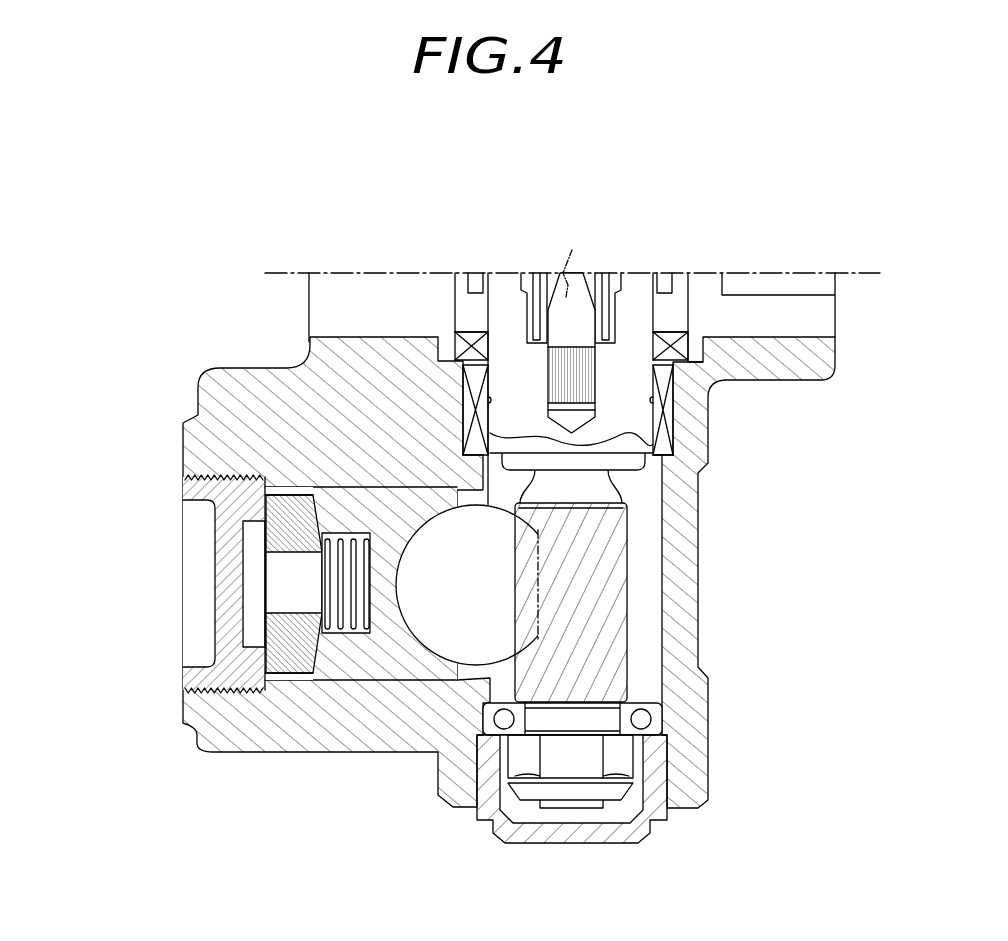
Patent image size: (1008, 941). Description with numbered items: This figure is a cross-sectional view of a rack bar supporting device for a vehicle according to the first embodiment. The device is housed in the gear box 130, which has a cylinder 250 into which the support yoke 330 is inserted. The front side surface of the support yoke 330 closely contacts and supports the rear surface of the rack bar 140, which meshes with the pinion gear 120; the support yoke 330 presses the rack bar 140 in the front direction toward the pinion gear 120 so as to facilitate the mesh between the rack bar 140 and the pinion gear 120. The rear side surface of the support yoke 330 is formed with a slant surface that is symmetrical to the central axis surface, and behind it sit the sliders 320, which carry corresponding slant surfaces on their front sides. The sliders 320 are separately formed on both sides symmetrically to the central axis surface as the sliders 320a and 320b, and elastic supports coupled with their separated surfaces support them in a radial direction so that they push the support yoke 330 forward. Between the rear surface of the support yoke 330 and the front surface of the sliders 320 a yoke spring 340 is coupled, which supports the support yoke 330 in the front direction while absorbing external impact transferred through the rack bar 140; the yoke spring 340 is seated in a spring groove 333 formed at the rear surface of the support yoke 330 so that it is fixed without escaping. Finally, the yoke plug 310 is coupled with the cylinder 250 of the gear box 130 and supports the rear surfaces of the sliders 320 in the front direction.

The gear box 130 is at (215, 390).
The yoke plug 310 is at (198, 493).
The sliders 320 is at (189, 584).
The slider 320a is at (278, 538).
The slider 320b is at (272, 627).
The yoke spring 340 is at (335, 625).
The spring groove 333 is at (350, 633).
The support yoke 330 is at (420, 670).
The cylinder 250 is at (290, 680).
The rack bar 140 is at (488, 613).
The pinion gear 120 is at (607, 623).